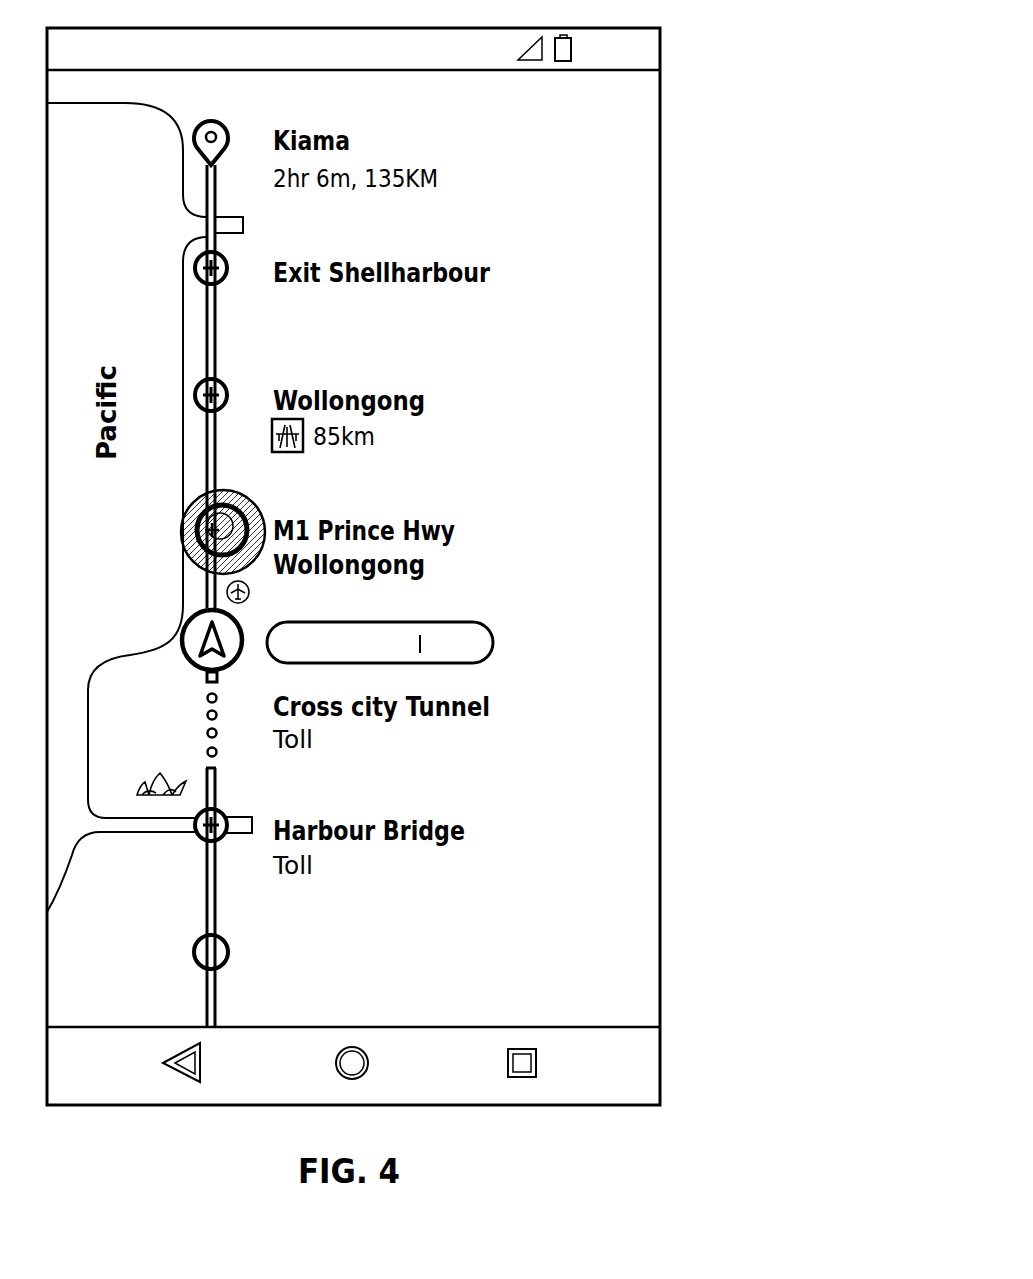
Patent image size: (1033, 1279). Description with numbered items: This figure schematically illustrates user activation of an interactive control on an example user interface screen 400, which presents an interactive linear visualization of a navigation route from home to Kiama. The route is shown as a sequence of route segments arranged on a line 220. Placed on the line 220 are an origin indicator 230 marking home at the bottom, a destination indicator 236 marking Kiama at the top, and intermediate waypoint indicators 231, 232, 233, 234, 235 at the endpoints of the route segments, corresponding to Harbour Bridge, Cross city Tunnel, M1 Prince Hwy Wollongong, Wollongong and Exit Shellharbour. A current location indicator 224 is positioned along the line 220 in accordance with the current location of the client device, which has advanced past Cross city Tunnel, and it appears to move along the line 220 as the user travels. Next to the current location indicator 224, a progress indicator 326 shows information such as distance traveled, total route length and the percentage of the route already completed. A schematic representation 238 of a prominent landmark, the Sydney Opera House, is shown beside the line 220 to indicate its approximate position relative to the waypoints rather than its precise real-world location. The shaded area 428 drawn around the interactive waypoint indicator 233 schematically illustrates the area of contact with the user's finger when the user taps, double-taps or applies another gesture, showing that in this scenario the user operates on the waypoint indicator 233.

The user interface screen 400 is at (663, 150).
The line 220 is at (207, 318).
The destination indicator 236 is at (213, 120).
The waypoint indicator 235 is at (229, 266).
The waypoint indicator 234 is at (224, 383).
The interactive waypoint indicator 233 is at (215, 500).
The shaded area 428 is at (253, 500).
The current location indicator 224 is at (197, 668).
The progress indicator 326 is at (460, 622).
The waypoint indicator 232 is at (217, 733).
The schematic representation of a prominent landmark 238 is at (166, 772).
The waypoint indicator 231 is at (225, 815).
The origin indicator 230 is at (285, 973).